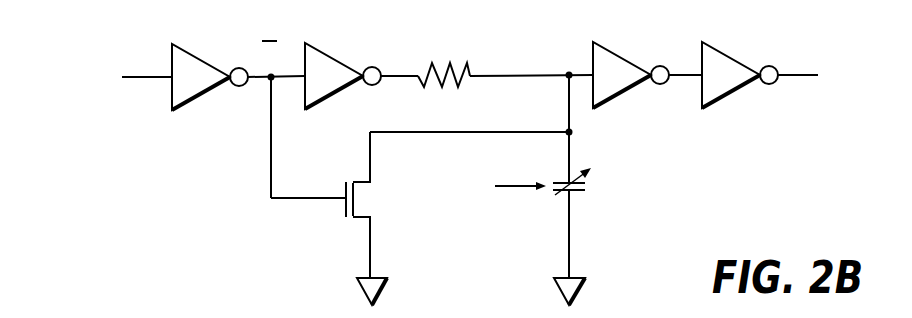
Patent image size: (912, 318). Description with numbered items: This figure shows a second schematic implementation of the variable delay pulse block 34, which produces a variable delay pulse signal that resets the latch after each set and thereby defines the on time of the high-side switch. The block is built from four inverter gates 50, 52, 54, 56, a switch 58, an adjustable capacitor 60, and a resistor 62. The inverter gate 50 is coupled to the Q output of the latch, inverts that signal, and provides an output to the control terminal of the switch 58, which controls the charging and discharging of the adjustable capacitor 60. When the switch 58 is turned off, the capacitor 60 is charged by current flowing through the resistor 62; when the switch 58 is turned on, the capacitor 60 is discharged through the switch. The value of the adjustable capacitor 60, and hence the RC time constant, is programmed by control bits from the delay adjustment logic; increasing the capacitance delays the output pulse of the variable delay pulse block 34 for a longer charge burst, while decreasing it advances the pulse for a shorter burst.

The variable delay pulse block 34 is at (459, 164).
The inverter gate 50 is at (186, 47).
The inverter gate 52 is at (319, 47).
The inverter gate 54 is at (607, 46).
The inverter gate 56 is at (717, 46).
The switch 58 is at (360, 220).
The adjustable capacitor 60 is at (566, 193).
The resistor 62 is at (452, 62).